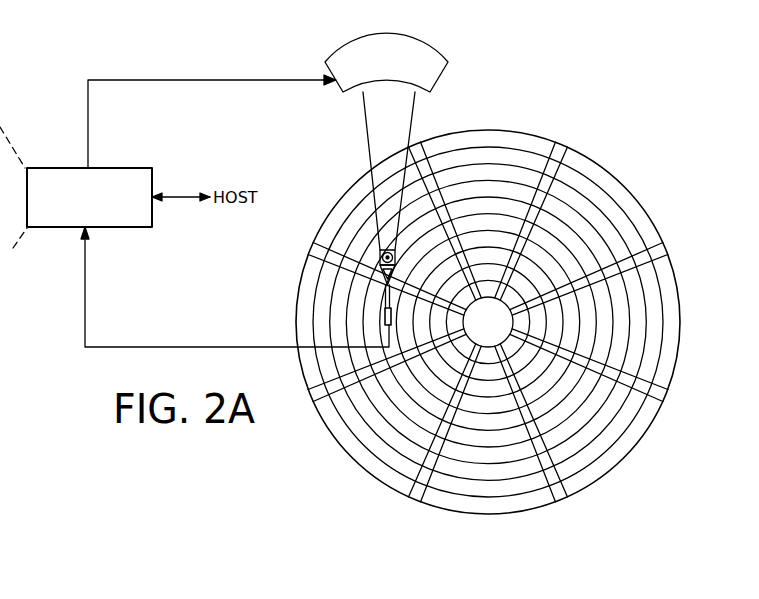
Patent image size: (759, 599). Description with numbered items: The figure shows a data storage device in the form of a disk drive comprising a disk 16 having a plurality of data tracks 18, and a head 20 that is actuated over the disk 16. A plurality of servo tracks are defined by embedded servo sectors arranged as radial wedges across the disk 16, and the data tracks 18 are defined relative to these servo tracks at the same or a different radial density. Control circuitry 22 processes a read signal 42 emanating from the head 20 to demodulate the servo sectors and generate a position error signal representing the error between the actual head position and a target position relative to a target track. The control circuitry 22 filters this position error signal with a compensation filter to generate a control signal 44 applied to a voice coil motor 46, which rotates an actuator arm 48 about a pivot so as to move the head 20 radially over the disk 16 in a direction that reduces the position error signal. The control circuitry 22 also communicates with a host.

The disk 16 is at (618, 174).
The data tracks 18 is at (474, 152).
The head 20 is at (383, 314).
The control circuitry 22 is at (123, 168).
The read signal 42 is at (222, 347).
The control signal 44 is at (88, 113).
The voice coil motor 46 is at (343, 92).
The actuator arm 48 is at (371, 137).